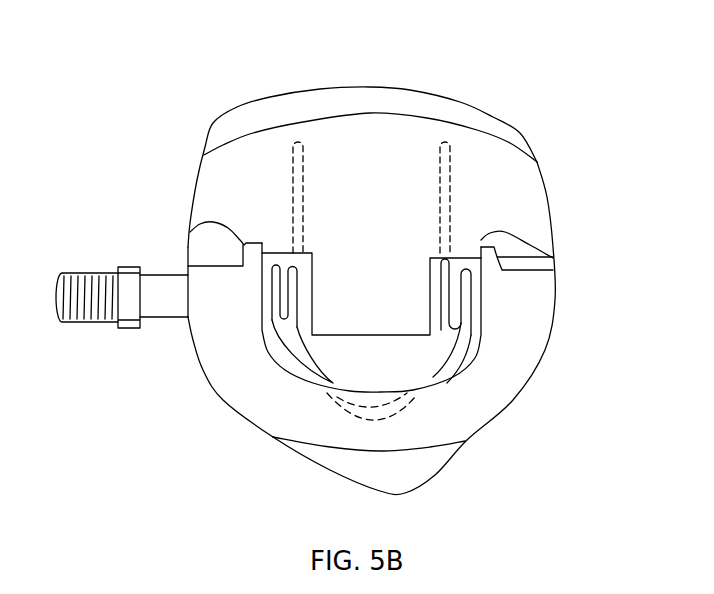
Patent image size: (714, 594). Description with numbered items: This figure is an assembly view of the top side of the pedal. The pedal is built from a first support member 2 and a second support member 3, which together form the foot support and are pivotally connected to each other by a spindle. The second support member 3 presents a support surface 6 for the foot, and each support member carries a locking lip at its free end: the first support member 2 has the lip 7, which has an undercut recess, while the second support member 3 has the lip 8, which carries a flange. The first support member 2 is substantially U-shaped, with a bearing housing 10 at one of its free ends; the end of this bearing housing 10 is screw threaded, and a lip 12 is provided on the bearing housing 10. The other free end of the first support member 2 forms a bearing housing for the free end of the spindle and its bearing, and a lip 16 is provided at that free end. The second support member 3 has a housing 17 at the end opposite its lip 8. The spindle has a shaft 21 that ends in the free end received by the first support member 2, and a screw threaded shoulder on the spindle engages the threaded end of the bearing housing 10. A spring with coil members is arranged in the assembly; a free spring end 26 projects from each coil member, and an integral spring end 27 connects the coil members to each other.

The first support member 2 is at (516, 404).
The second support member 3 is at (558, 246).
The support surface 6 is at (360, 204).
The lip 7 is at (400, 452).
The lip 8 is at (385, 98).
The bearing housing 10 is at (223, 332).
The lip 12 is at (193, 225).
The lip 16 is at (553, 258).
The housing 17 is at (393, 322).
The shaft 21 is at (170, 308).
The free spring end 26 is at (453, 223).
The integral spring end 27 is at (457, 350).